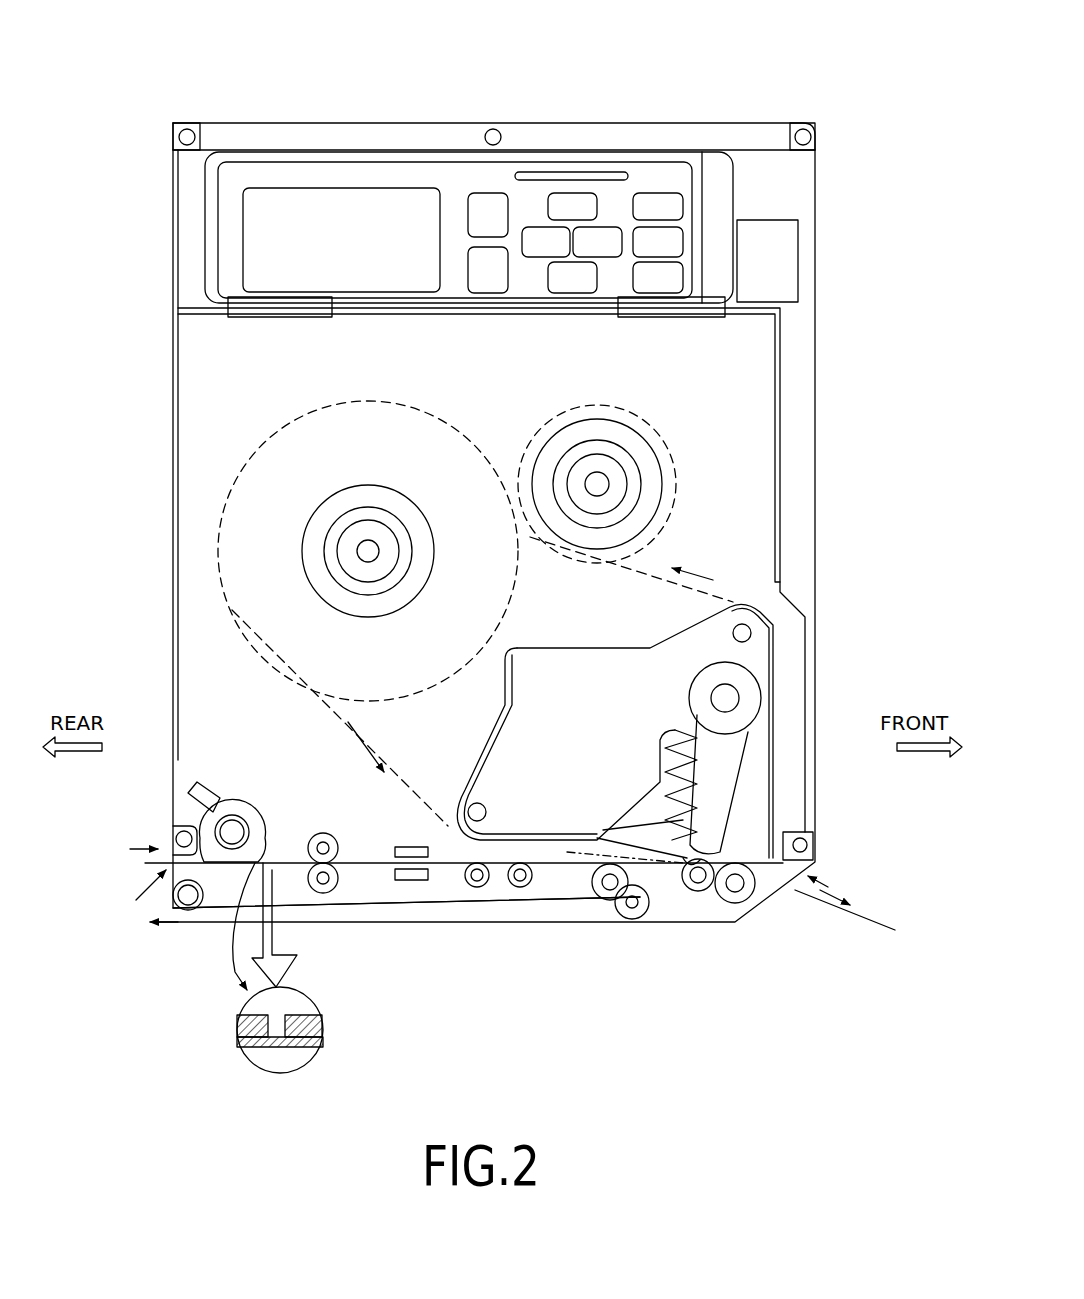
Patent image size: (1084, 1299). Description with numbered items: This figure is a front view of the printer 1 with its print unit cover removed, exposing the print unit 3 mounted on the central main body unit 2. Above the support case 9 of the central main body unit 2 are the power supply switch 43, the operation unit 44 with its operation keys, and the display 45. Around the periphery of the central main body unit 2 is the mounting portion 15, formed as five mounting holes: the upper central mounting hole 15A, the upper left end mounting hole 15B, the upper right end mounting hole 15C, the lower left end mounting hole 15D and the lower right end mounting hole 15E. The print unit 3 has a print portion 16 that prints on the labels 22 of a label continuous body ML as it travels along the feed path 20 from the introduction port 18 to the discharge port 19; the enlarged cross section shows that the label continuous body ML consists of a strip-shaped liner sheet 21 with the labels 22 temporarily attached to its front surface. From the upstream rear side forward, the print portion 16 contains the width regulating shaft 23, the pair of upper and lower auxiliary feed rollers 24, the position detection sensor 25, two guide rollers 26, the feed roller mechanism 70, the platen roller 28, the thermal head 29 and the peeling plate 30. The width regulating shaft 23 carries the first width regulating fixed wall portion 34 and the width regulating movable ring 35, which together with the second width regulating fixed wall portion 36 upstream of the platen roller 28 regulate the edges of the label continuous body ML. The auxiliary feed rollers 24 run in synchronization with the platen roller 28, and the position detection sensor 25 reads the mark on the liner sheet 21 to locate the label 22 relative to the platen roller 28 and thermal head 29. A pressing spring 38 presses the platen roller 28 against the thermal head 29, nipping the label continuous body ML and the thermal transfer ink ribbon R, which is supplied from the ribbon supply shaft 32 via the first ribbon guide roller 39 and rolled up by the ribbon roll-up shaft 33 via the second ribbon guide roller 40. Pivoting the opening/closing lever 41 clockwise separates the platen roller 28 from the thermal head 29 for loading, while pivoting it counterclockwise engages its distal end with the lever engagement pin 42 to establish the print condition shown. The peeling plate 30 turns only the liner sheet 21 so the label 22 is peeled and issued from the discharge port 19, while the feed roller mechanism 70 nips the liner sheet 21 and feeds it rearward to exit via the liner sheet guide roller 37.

The printer 1 is at (703, 76).
The central main body unit 2 is at (817, 180).
The print unit 3 is at (575, 980).
The support case 9 is at (790, 388).
The mounting portion 15 is at (462, 118).
The upper central mounting hole 15A is at (493, 128).
The upper left end mounting hole 15B is at (187, 128).
The upper right end mounting hole 15C is at (803, 128).
The lower left end mounting hole 15D is at (178, 834).
The lower right end mounting hole 15E is at (805, 845).
The print portion 16 is at (780, 793).
The introduction port 18 is at (142, 898).
The discharge port 19 is at (844, 896).
The feed path 20 is at (368, 850).
The liner sheet 21 is at (555, 898).
The label 22 is at (812, 915).
The width regulating shaft 23 is at (235, 826).
The auxiliary feed rollers 24 is at (323, 893).
The position detection sensor 25 is at (408, 880).
The guide rollers 26 is at (520, 888).
The platen roller 28 is at (735, 904).
The thermal head 29 is at (700, 892).
The peeling plate 30 is at (772, 903).
The ribbon supply shaft 32 is at (395, 538).
The ribbon roll-up shaft 33 is at (630, 470).
The first width regulating fixed wall portion 34 is at (258, 818).
The width regulating movable ring 35 is at (204, 790).
The second width regulating fixed wall portion 36 is at (636, 918).
The liner sheet guide roller 37 is at (190, 908).
The pressing spring 38 is at (655, 790).
The first ribbon guide roller 39 is at (447, 812).
The second ribbon guide roller 40 is at (718, 610).
The opening/closing lever 41 is at (697, 712).
The lever engagement pin 42 is at (690, 885).
The power supply switch 43 is at (800, 262).
The operation unit 44 is at (605, 205).
The display 45 is at (318, 210).
The feed roller mechanism 70 is at (607, 912).
The thermal transfer ink ribbon R is at (352, 718).
The label continuous body ML is at (272, 1055).